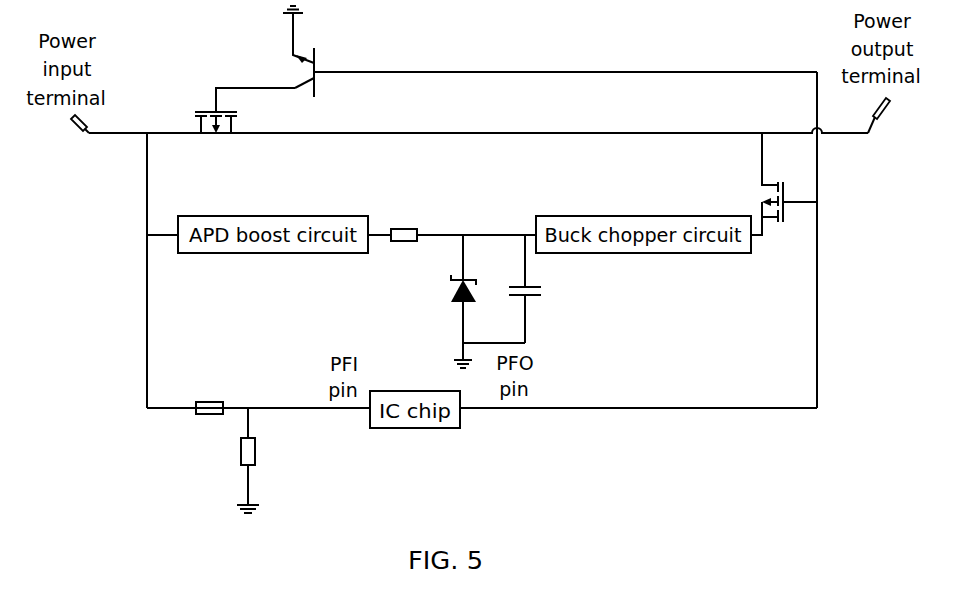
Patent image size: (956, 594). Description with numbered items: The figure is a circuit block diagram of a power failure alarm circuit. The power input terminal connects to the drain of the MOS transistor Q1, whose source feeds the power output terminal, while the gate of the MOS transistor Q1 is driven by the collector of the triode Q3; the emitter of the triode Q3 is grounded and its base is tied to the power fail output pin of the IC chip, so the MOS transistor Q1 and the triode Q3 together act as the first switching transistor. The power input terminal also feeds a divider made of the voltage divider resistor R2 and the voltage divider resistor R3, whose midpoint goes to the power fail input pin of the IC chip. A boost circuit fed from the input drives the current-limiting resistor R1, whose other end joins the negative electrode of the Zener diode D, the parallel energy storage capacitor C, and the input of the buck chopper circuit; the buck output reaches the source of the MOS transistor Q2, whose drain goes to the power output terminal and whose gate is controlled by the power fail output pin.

The MOS transistor Q1 is at (245, 128).
The MOS transistor Q2 is at (784, 191).
The triode Q3 is at (550, 51).
The current-limiting resistor R1 is at (452, 250).
The voltage divider resistor R2 is at (209, 394).
The voltage divider resistor R3 is at (267, 460).
The Zener diode D is at (476, 301).
The energy storage capacitor C is at (533, 289).